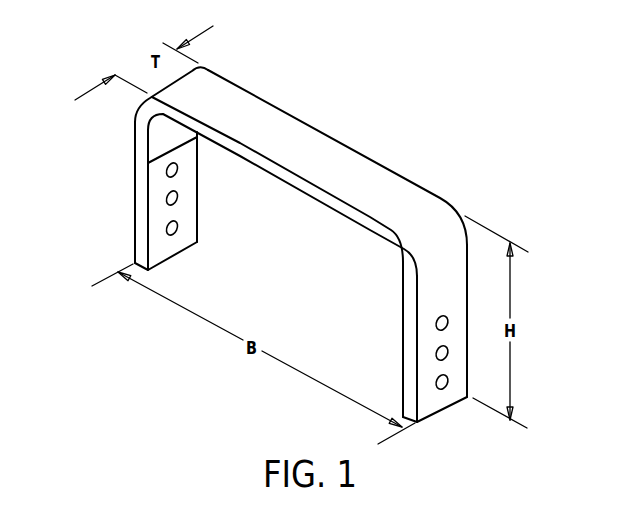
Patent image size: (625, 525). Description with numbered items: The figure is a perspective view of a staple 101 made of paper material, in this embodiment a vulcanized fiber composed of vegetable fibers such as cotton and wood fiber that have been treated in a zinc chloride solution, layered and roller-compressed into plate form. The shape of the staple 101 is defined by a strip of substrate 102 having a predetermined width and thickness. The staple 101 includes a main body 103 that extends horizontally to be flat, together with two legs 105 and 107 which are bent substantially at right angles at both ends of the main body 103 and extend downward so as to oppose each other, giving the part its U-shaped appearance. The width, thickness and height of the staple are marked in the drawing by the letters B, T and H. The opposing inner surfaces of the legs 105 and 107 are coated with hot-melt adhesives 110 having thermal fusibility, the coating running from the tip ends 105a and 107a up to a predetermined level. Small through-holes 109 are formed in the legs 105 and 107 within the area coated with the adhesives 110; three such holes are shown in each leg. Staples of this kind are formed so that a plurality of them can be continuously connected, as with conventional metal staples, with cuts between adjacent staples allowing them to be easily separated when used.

The staple 101 is at (272, 260).
The substrate 102 is at (302, 164).
The main body 103 is at (250, 112).
The leg 105 is at (445, 356).
The tip end 105a is at (427, 418).
The leg 107 is at (156, 208).
The tip end 107a is at (172, 258).
The through-holes 109 is at (177, 228).
The adhesives 110 is at (183, 180).